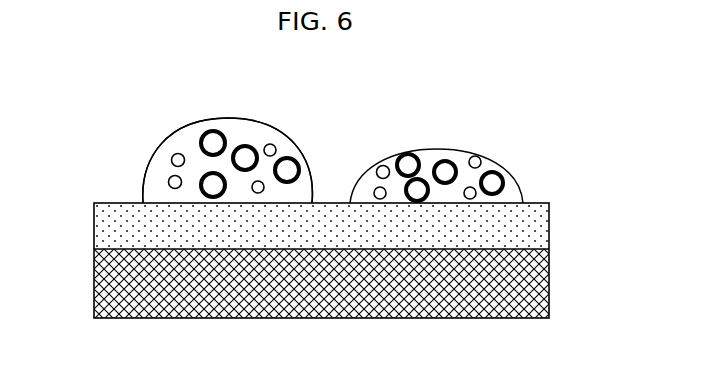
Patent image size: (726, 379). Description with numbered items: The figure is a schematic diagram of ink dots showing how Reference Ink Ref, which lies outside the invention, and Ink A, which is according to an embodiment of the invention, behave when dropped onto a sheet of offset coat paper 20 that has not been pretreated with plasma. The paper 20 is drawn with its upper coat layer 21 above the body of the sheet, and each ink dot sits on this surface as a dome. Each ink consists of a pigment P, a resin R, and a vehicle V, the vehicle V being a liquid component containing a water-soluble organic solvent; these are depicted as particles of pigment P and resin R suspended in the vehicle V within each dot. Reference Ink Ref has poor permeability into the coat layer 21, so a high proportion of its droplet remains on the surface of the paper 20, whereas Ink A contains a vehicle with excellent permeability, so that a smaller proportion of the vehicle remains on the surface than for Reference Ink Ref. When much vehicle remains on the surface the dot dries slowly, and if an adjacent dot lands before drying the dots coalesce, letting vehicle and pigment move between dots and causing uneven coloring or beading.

The offset coat paper 20 is at (83, 205).
The coat layer 21 is at (557, 210).
The vehicle V is at (158, 155).
The Reference Ink Ref is at (228, 145).
The Ink A is at (436, 157).
The pigment P is at (298, 163).
The resin R is at (276, 148).